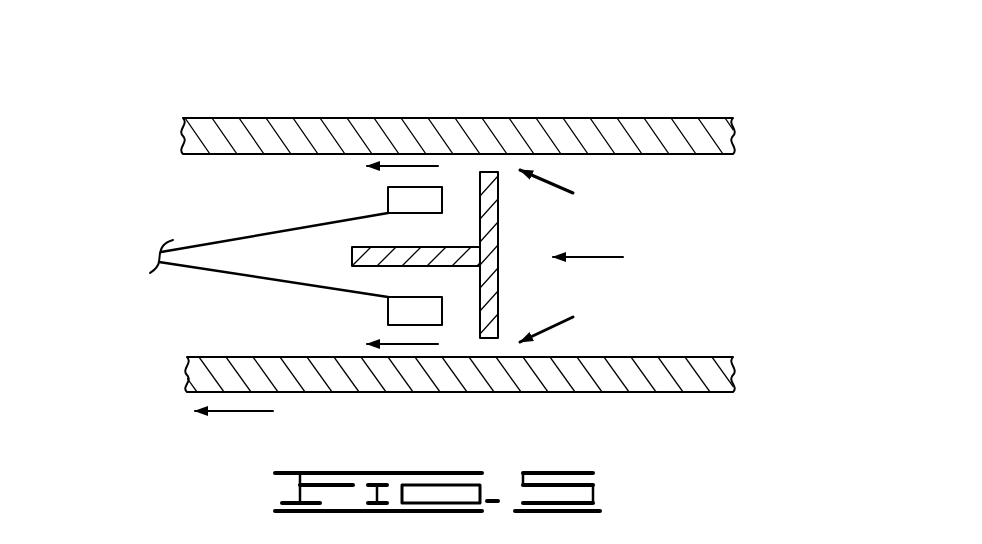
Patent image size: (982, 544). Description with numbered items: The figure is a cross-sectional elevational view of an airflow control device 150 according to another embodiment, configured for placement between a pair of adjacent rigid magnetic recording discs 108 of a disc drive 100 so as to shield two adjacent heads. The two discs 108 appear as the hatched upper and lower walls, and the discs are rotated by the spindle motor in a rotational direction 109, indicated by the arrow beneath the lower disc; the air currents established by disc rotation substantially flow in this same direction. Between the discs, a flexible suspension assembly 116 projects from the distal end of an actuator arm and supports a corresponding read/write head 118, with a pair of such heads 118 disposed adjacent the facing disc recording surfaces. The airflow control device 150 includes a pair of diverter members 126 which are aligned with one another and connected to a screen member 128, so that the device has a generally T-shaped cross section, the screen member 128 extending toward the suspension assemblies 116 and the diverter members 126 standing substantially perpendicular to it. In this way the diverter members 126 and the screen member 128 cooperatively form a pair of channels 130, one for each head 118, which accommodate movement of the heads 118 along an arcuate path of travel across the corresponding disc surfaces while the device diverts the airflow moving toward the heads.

The disc drive 100 is at (168, 223).
The rigid magnetic recording disc 108 is at (695, 126).
The rotational direction 109 is at (235, 411).
The flexible suspension assembly 116 is at (267, 232).
The read/write head 118 is at (395, 200).
The diverter member 126 is at (498, 232).
The screen member 128 is at (352, 255).
The channel 130 is at (462, 203).
The airflow control device 150 is at (697, 222).